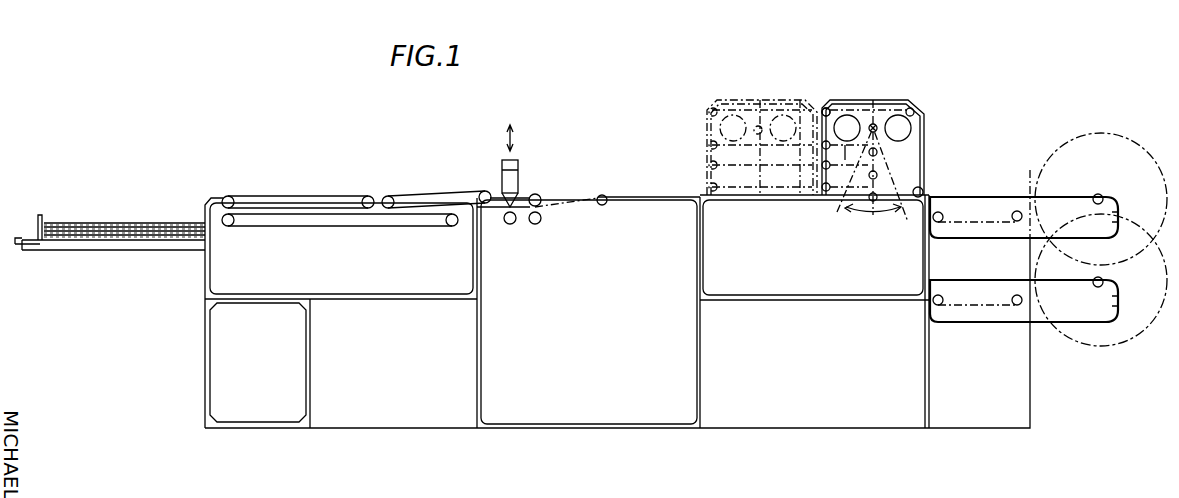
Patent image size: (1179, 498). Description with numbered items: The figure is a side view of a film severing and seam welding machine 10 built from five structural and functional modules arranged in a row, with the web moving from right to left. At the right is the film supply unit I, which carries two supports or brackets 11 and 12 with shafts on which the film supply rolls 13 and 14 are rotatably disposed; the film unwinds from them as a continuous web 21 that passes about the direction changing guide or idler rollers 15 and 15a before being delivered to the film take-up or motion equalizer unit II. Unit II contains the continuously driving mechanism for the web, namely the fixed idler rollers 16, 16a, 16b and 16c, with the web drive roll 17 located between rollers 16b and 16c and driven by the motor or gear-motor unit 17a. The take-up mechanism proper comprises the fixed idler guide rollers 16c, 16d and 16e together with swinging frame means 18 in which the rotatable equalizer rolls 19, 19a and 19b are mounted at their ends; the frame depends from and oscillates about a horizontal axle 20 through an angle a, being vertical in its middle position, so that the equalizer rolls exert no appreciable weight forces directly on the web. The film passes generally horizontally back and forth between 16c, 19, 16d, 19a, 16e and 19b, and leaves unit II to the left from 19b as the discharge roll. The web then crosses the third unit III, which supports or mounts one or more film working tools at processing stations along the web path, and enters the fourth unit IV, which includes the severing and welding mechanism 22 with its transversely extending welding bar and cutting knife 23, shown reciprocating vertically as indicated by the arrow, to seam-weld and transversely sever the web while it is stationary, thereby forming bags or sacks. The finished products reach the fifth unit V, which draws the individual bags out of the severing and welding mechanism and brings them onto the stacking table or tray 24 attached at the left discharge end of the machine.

The film severing and seam welding machine 10 is at (602, 125).
The first paper supply tray 11 is at (1120, 217).
The second paper supply tray 12 is at (1120, 304).
The film supply roll 13 is at (1125, 150).
The film supply roll 14 is at (1104, 340).
The direction changing guide roller 15 is at (1018, 210).
The direction changing guide roller 15a is at (940, 212).
The fixed idler roller 16 is at (912, 200).
The fixed idler roller 16a is at (914, 113).
The fixed idler roller 16b is at (826, 108).
The fixed idler roller 16c is at (824, 143).
The fixed idler guide roller 16d is at (822, 165).
The fixed idler guide roller 16e is at (822, 186).
The web drive roll 17 is at (848, 126).
The driving motor or gear-motor unit 17a is at (899, 127).
The swinging frame means 18 is at (877, 174).
The equalizer roll 19 is at (877, 152).
The equalizer roll 19a is at (890, 176).
The equalizer roll 19b is at (874, 202).
The horizontal shaft or axle 20 is at (874, 124).
The web of film 21 is at (584, 194).
The severing and welding mechanism 22 is at (528, 186).
The cutting device 23 is at (503, 183).
The stacking table or tray 24 is at (128, 238).
The angle a is at (858, 210).
The film supply unit I is at (975, 203).
The film take-up or motion equalizer unit II is at (873, 100).
The third unit III is at (815, 272).
The fourth structural unit IV is at (632, 190).
The fifth structural unit V is at (338, 190).